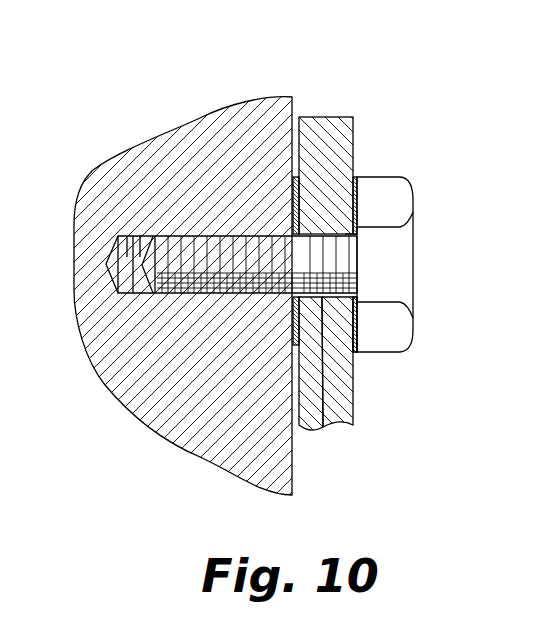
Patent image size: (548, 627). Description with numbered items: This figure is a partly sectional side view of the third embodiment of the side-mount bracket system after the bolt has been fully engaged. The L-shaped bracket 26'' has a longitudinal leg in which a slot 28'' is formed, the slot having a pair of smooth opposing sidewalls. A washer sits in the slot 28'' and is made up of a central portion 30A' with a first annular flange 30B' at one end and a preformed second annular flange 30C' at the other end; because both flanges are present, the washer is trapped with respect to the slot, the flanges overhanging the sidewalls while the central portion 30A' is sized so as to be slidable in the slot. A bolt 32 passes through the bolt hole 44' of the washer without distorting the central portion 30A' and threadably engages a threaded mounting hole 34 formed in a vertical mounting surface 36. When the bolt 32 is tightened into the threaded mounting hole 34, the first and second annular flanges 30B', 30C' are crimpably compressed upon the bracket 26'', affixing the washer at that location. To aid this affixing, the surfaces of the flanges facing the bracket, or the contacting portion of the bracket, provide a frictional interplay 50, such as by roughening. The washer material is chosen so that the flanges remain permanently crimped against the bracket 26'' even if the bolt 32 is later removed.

The bracket 26'' is at (349, 137).
The slot 28'' is at (315, 262).
The central portion 30A' is at (350, 399).
The first annular flange 30B' is at (246, 400).
The second annular flange 30C' is at (401, 357).
The bolt 32 is at (415, 315).
The threaded mounting hole 34 is at (140, 237).
The vertical mounting surface 36 is at (296, 112).
The bolt hole 44' is at (409, 243).
The frictional interplay 50 is at (293, 178).